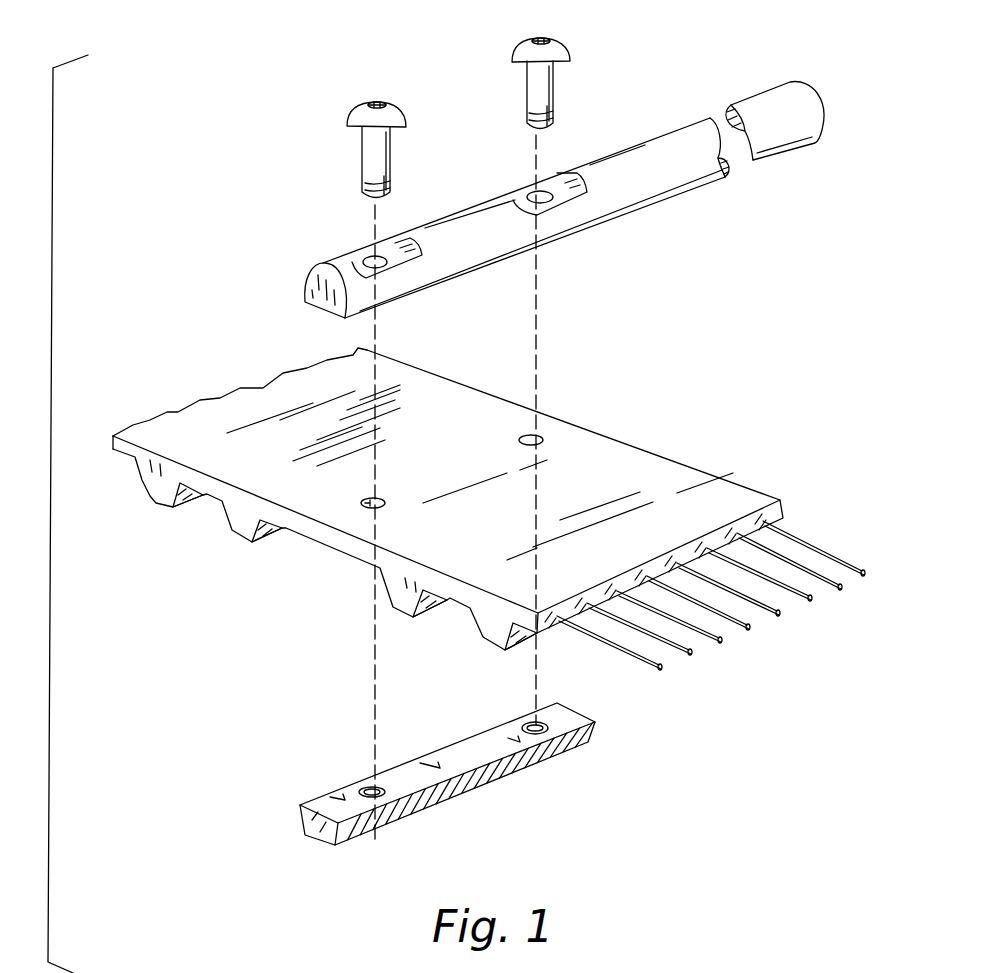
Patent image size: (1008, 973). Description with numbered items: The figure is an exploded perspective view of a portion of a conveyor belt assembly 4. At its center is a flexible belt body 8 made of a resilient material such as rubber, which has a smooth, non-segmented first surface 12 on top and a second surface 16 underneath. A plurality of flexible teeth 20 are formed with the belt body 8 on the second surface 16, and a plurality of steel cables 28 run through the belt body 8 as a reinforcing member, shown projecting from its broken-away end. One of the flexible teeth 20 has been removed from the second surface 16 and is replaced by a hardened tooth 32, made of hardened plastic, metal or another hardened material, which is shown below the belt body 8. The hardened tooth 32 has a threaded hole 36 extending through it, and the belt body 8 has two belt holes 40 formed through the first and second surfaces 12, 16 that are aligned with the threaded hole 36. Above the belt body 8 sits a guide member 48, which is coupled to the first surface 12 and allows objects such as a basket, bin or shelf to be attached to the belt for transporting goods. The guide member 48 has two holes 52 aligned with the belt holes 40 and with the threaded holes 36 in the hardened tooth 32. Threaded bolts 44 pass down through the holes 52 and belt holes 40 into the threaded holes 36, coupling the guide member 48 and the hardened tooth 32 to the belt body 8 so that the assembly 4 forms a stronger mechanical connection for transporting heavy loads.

The conveyor belt assembly 4 is at (163, 178).
The flexible belt body 8 is at (640, 446).
The first surface 12 is at (534, 515).
The second surface 16 is at (118, 458).
The flexible teeth 20 is at (233, 540).
The steel cables 28 is at (787, 622).
The hardened tooth 32 is at (427, 810).
The threaded hole 36 is at (370, 788).
The belt holes 40 is at (360, 503).
The threaded bolts 44 is at (385, 103).
The guide member 48 is at (647, 207).
The holes 52 is at (540, 190).